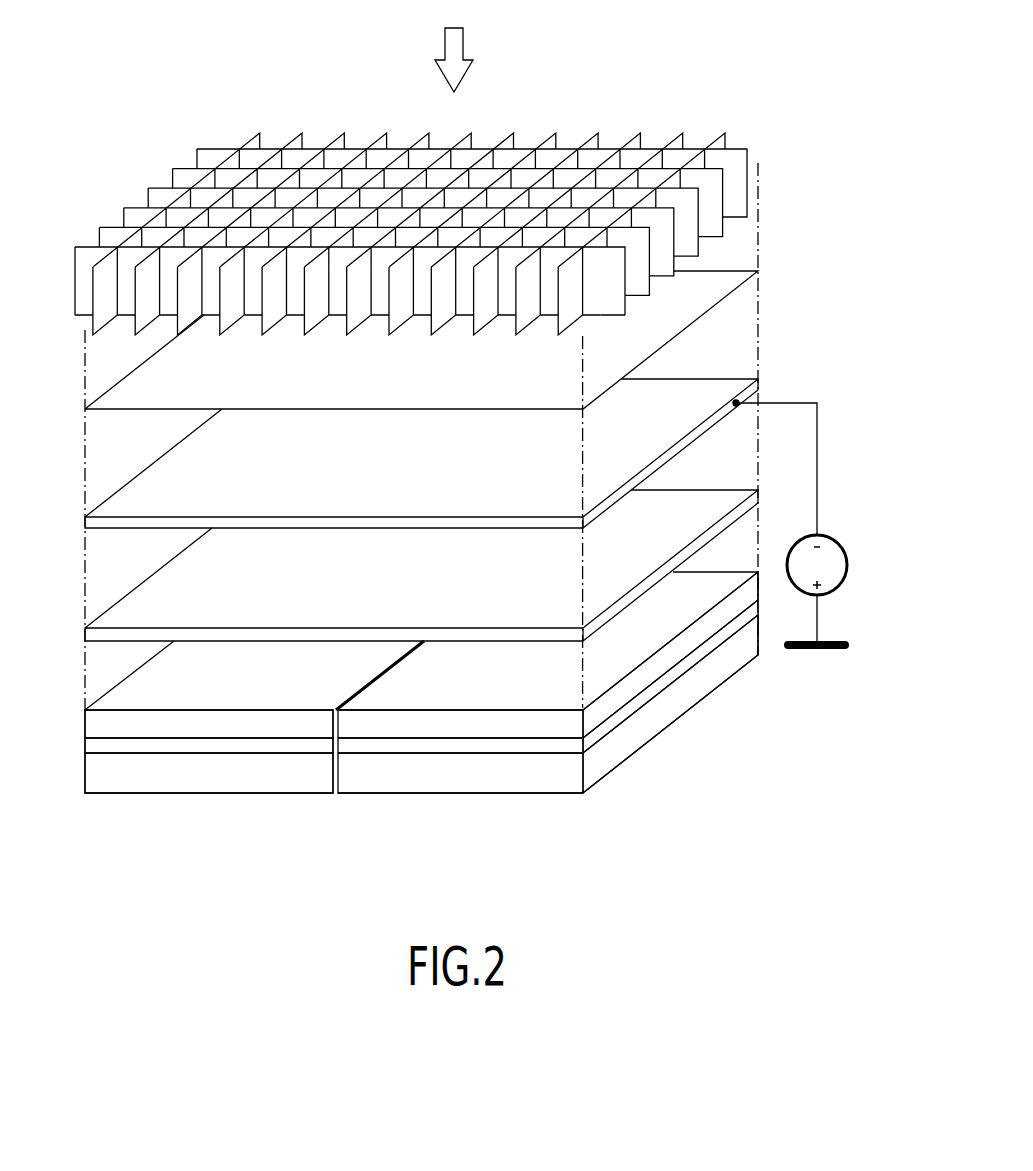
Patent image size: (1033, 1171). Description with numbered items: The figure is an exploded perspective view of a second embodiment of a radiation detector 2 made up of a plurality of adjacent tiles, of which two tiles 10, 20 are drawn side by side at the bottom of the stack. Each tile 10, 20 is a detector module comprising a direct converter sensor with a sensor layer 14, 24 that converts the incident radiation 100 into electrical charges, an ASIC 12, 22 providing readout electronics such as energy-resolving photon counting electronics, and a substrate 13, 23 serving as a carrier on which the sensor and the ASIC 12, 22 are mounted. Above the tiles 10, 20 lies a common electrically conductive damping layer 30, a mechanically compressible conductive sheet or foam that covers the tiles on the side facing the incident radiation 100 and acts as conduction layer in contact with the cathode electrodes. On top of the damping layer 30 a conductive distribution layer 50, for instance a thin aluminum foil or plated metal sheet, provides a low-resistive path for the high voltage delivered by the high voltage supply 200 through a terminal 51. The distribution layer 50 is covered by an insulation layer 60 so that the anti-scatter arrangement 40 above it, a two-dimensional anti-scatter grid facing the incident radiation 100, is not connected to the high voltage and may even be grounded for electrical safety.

The radiation detector 2 is at (697, 808).
The incident radiation 100 is at (463, 40).
The anti-scatter arrangement 40 is at (150, 188).
The insulation layer 60 is at (125, 376).
The conductive distribution layer 50 is at (125, 486).
The terminal 51 is at (745, 398).
The damping layer 30 is at (125, 596).
The tile 10 is at (216, 800).
The sensor layer 14 is at (112, 725).
The ASIC 12 is at (112, 746).
The substrate 13 is at (115, 793).
The tile 20 is at (408, 800).
The sensor layer 24 is at (680, 647).
The ASIC 22 is at (645, 695).
The substrate 23 is at (545, 793).
The high voltage supply 200 is at (845, 584).